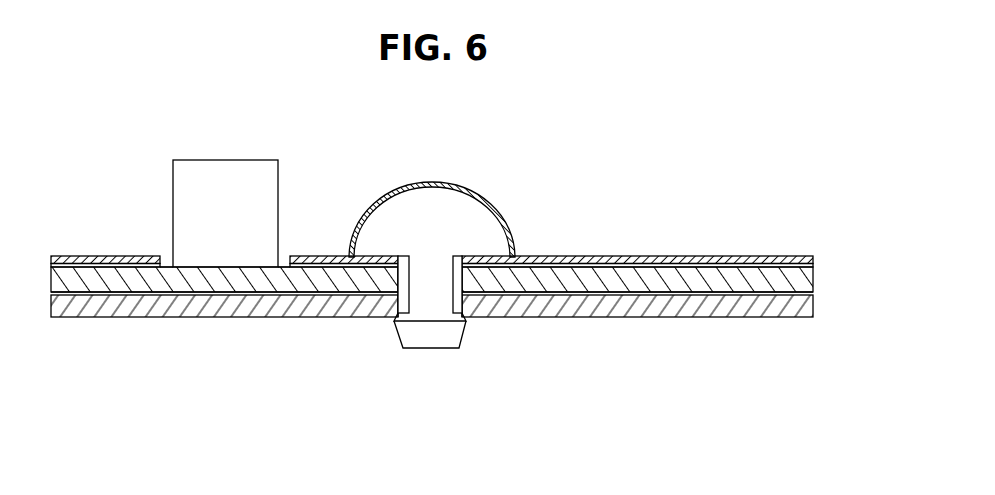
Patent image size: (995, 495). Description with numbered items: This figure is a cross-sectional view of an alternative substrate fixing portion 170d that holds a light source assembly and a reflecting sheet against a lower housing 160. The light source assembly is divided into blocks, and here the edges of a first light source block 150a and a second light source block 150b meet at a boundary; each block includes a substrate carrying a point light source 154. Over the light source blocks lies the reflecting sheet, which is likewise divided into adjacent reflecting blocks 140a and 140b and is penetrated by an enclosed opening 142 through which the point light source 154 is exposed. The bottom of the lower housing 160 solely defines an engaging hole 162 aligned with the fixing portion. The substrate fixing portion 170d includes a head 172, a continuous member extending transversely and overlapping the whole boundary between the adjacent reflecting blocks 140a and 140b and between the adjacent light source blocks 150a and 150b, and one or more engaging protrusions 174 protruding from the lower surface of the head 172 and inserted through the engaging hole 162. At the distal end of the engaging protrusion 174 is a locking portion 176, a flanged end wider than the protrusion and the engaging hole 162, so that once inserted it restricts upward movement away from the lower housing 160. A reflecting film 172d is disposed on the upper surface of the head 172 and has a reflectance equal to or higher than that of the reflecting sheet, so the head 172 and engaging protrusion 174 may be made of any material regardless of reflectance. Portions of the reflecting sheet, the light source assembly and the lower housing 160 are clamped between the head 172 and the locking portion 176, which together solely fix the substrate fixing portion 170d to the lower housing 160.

The reflecting block 140a is at (90, 262).
The reflecting block 140b is at (683, 262).
The opening 142 is at (166, 262).
The first light source block 150a is at (116, 280).
The second light source block 150b is at (731, 283).
The point light source 154 is at (227, 175).
The lower housing 160 is at (217, 310).
The engaging hole 162 is at (466, 302).
The substrate fixing portion 170d is at (392, 322).
The head 172 is at (390, 238).
The reflecting film 172d is at (345, 265).
The engaging protrusion 174 is at (437, 295).
The locking portion 176 is at (430, 366).